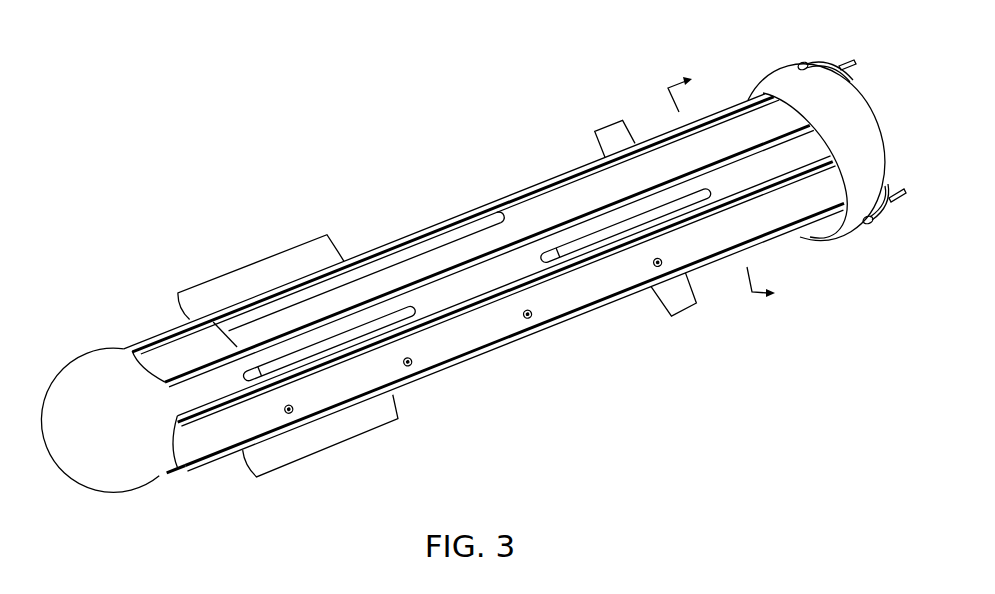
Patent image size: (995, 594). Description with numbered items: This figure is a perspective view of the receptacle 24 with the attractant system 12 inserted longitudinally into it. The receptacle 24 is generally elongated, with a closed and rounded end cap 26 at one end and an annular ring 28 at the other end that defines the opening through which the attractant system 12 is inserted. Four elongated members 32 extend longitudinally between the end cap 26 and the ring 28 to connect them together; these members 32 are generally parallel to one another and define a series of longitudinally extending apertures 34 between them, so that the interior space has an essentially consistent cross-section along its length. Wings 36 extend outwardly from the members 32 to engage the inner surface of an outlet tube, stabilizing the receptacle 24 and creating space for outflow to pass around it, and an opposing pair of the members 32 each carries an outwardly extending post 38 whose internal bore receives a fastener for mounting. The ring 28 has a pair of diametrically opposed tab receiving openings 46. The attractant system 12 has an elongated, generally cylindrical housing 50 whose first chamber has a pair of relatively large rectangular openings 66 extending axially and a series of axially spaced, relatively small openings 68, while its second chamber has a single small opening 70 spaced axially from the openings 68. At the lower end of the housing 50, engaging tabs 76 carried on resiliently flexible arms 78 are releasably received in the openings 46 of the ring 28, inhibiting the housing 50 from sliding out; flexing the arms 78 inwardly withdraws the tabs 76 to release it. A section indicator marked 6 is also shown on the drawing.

The attractant system 12 is at (608, 394).
The receptacle 24 is at (82, 378).
The end cap 26 is at (117, 482).
The annular ring 28 is at (867, 122).
The elongated members 32 is at (362, 253).
The apertures 34 is at (530, 210).
The wings 36 is at (247, 278).
The post 38 is at (610, 130).
The tab receiving openings 46 is at (852, 80).
The housing 50 is at (702, 254).
The rectangular openings 66 is at (451, 245).
The small openings 68 is at (287, 412).
The opening 70 is at (660, 270).
The engaging tabs 76 is at (802, 63).
The resiliently flexible arms 78 is at (839, 62).
The section line 6- 6 is at (736, 179).